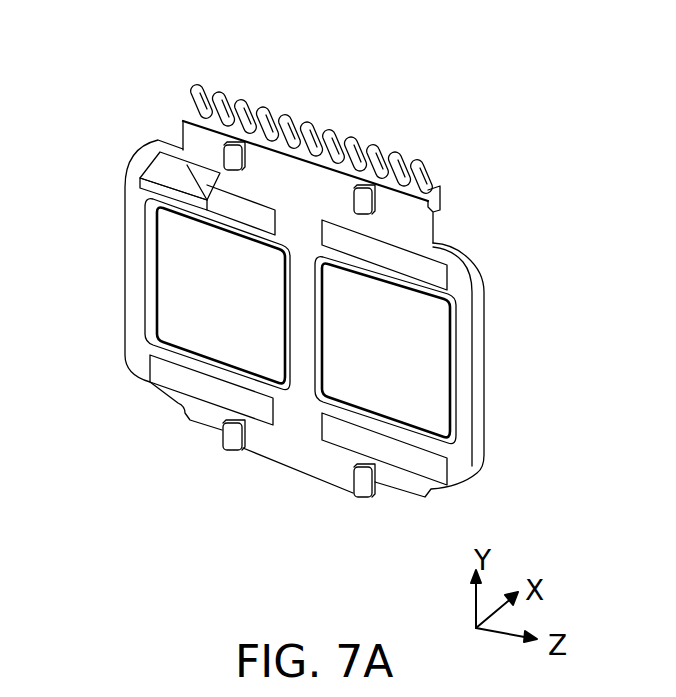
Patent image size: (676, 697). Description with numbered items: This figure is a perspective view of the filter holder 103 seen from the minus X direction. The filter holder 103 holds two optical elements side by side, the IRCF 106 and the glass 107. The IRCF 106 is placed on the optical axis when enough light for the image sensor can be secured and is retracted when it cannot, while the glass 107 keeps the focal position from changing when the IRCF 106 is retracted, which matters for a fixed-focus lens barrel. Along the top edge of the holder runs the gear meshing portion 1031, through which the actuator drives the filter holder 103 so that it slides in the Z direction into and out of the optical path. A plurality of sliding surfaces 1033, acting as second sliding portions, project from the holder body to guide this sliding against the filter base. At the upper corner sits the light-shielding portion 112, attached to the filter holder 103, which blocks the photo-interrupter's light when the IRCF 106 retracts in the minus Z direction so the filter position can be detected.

The filter holder 103 is at (482, 48).
The gear meshing portion 1031 is at (262, 117).
The sliding surfaces 1033 is at (365, 497).
The light-shielding portion 112 is at (210, 185).
The IRCF 106 is at (193, 307).
The glass 107 is at (418, 388).